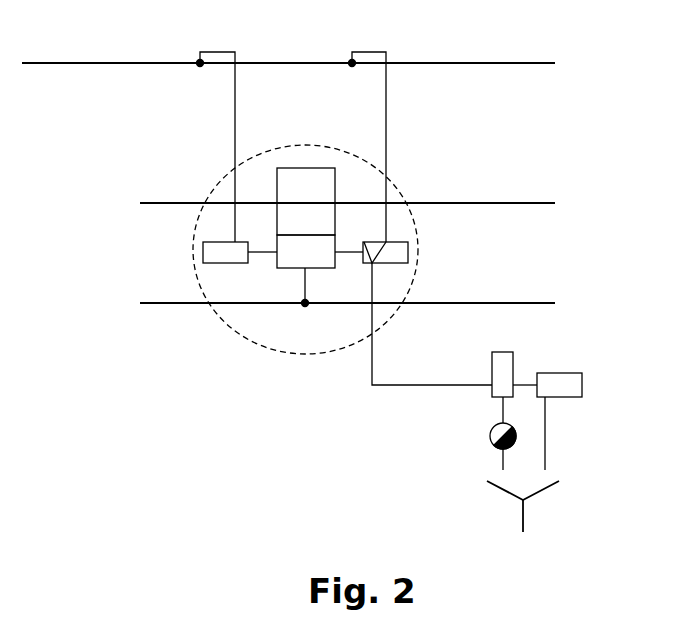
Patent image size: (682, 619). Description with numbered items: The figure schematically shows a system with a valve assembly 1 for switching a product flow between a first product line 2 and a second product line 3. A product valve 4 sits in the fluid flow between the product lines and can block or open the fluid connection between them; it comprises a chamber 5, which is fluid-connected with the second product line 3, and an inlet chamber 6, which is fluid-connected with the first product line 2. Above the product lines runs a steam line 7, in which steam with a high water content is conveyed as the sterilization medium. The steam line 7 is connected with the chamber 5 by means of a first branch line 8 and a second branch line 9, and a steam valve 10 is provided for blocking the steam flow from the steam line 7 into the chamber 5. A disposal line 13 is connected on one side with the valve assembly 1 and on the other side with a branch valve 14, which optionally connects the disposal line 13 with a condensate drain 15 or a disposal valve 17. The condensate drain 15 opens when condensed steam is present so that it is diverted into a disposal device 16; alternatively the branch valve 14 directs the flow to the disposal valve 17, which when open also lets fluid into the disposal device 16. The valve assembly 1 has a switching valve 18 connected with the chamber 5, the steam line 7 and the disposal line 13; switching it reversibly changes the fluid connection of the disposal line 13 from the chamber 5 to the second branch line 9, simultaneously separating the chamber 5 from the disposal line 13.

The valve assembly 1 is at (402, 192).
The first product line 2 is at (527, 203).
The second product line 3 is at (528, 303).
The product valve 4 is at (277, 190).
The chamber 5 is at (300, 262).
The inlet chamber 6 is at (315, 193).
The steam line 7 is at (518, 63).
The first branch line 8 is at (235, 108).
The second branch line 9 is at (386, 108).
The steam valve 10 is at (218, 252).
The disposal line 13 is at (371, 373).
The branch valve 14 is at (502, 362).
The condensate drain 15 is at (497, 432).
The disposal device 16 is at (526, 507).
The disposal valve 17 is at (567, 383).
The switching valve 18 is at (395, 257).